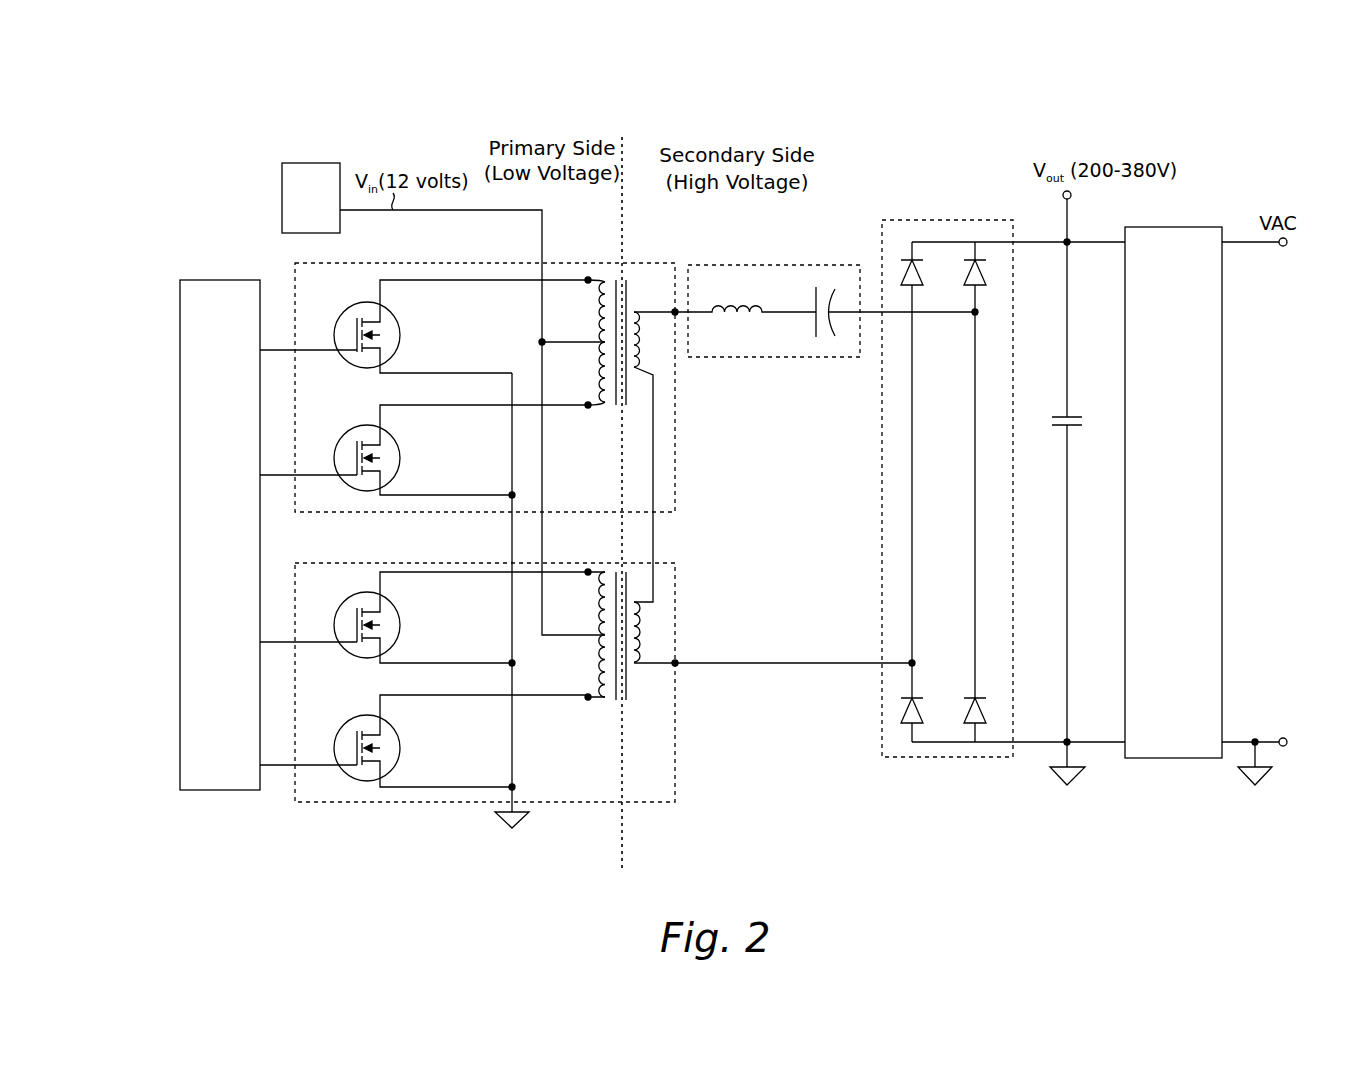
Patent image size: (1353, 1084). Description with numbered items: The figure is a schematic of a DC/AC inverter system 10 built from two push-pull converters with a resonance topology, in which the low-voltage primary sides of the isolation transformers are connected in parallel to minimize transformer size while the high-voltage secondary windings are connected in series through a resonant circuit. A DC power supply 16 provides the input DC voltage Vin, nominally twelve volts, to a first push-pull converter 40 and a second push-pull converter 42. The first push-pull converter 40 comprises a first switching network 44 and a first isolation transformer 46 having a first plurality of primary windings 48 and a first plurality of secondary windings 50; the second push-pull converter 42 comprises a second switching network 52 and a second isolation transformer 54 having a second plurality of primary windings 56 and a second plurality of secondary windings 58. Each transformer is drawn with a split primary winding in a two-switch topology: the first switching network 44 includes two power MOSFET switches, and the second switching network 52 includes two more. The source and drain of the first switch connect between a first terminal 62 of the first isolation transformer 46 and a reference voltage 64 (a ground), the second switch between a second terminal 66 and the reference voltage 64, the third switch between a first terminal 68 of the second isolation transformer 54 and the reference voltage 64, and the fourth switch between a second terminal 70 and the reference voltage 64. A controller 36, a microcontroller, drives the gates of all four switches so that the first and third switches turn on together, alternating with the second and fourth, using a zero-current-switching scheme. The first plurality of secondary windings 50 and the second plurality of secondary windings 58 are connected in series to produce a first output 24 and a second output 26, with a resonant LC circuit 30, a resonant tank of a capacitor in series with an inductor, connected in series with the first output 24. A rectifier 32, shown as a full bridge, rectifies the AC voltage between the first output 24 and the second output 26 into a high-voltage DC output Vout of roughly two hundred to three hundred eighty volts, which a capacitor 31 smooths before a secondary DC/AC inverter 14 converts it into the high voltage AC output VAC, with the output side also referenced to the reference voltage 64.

The DC/AC inverter system 10 is at (258, 101).
The DC power supply 16 is at (300, 209).
The controller 36 is at (204, 371).
The first push-pull converter 40 is at (288, 265).
The second push-pull converter 42 is at (306, 804).
The first switching network 44 is at (321, 412).
The second switching network 52 is at (326, 696).
The first terminal of first isolation transformer 62 is at (588, 280).
The second terminal of first isolation transformer 66 is at (588, 405).
The first terminal of second isolation transformer 68 is at (588, 572).
The second terminal of second isolation transformer 70 is at (588, 697).
The first plurality of primary windings 48 is at (605, 268).
The second plurality of primary windings 56 is at (606, 700).
The first plurality of secondary windings 50 is at (634, 268).
The second isolation transformer 54 is at (620, 663).
The first isolation transformer 46 is at (622, 350).
The second plurality of secondary windings 58 is at (637, 637).
The first output 24 is at (675, 312).
The second output 26 is at (675, 663).
The resonant LC circuit 30 is at (750, 265).
The rectifier 32 is at (912, 220).
The capacitor 31 is at (1073, 415).
The secondary DC/AC inverter 14 is at (1154, 381).
The reference voltage 64 is at (495, 814).